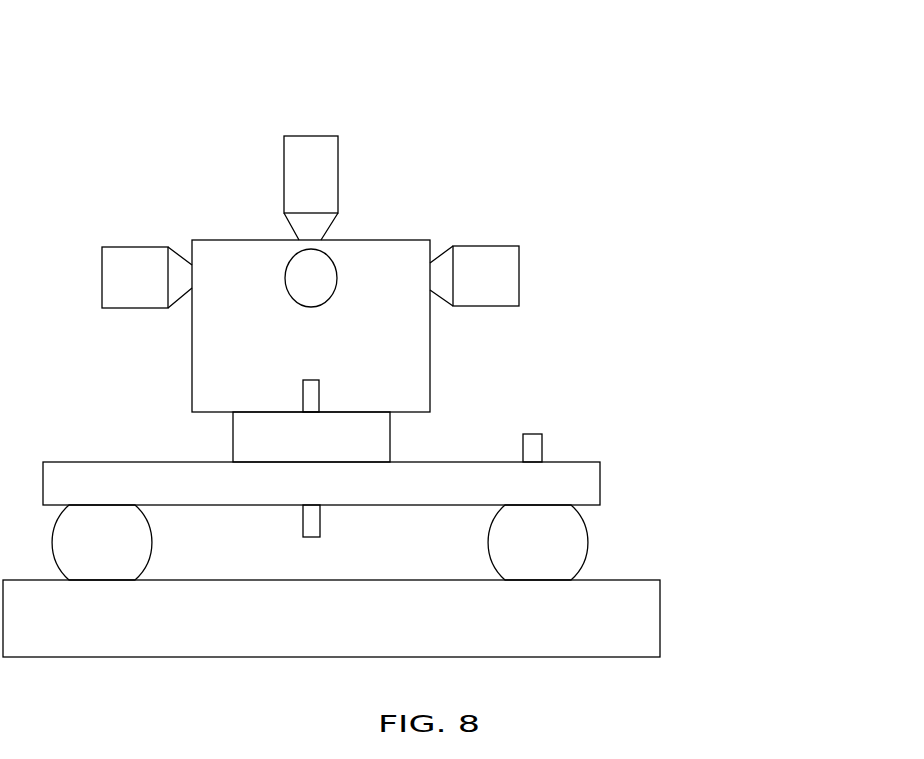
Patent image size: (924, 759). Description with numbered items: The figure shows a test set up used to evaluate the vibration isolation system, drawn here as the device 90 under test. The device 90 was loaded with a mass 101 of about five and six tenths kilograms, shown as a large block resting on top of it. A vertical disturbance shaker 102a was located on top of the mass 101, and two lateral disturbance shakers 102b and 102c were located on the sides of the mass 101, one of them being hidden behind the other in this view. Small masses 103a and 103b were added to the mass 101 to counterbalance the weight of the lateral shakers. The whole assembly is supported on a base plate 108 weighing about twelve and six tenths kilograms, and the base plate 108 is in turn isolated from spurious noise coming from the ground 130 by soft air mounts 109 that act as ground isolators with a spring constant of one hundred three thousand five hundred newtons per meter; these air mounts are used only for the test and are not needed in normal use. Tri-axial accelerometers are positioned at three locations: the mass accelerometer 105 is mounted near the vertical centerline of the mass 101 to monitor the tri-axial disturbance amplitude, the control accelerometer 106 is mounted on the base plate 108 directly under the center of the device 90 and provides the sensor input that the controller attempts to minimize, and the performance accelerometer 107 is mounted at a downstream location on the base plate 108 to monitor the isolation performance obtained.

The device 90 is at (231, 441).
The mass 101 is at (190, 360).
The vertical disturbance shaker 102a is at (340, 162).
The lateral disturbance shaker 102b is at (147, 245).
The lateral disturbance shaker 102c is at (257, 239).
The small mass 103a is at (491, 245).
The small mass 103b is at (537, 199).
The mass accelerometer 105 is at (324, 389).
The control accelerometer 106 is at (321, 503).
The performance accelerometer 107 is at (547, 438).
The base plate 108 is at (604, 475).
The soft air mounts 109 is at (591, 554).
The ground 130 is at (663, 622).